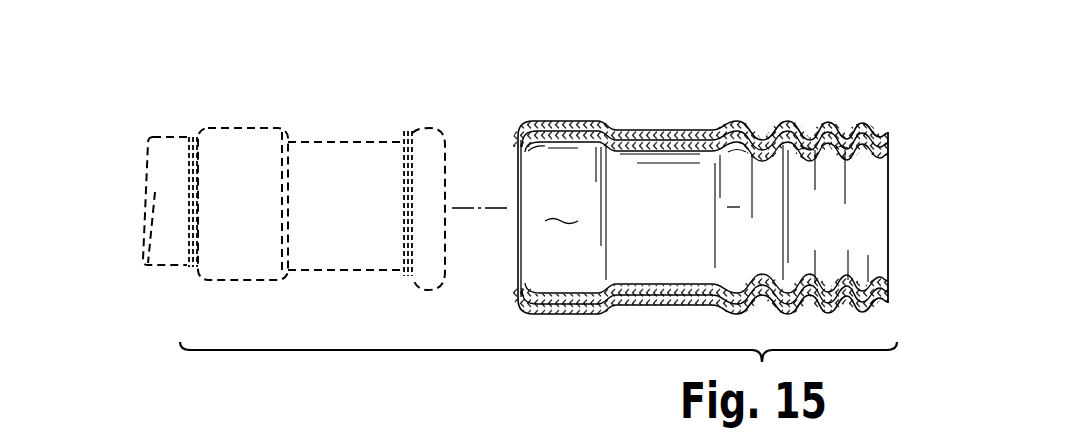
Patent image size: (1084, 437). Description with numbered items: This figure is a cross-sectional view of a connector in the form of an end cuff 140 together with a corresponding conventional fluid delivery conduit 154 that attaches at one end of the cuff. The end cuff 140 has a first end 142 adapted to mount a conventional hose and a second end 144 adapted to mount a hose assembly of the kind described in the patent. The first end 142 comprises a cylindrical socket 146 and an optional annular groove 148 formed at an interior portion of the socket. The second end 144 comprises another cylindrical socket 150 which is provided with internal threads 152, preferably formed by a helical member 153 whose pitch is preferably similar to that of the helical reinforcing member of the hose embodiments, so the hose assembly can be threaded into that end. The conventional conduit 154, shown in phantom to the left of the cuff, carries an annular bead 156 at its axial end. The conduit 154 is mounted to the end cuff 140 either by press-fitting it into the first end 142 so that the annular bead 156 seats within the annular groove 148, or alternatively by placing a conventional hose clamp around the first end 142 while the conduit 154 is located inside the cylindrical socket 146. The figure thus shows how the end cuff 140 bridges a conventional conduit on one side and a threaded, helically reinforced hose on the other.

The end cuff 140 is at (741, 202).
The first end 142 is at (570, 122).
The second end 144 is at (863, 128).
The cylindrical socket 146 is at (561, 210).
The annular groove 148 is at (733, 206).
The cylindrical socket 150 is at (778, 253).
The internal threads 152 is at (828, 148).
The helical member 153 is at (765, 135).
The fluid delivery conduit 154 is at (326, 173).
The annular bead 156 is at (422, 162).